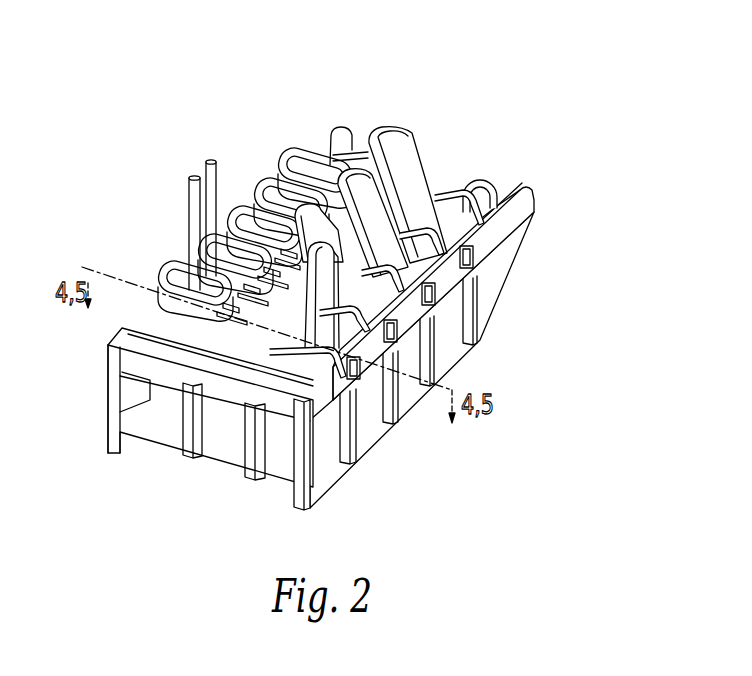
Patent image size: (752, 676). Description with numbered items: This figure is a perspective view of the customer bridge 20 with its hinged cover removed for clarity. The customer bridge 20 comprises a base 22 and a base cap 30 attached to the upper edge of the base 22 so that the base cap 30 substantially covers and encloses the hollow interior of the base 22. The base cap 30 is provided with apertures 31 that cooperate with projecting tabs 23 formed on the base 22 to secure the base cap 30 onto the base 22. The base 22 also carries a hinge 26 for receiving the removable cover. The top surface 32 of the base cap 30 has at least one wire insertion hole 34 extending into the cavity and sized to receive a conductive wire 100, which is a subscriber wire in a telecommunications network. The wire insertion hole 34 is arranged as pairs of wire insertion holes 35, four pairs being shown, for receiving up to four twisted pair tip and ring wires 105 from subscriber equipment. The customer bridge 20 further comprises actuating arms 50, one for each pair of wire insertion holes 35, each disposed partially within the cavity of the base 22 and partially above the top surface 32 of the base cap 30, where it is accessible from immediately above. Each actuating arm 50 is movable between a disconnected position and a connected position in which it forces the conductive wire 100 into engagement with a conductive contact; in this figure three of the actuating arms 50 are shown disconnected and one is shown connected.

The customer bridge 20 is at (477, 88).
The base 22 is at (350, 312).
The projecting tabs 23 is at (434, 298).
The hinge 26 is at (489, 198).
The base cap 30 is at (463, 291).
The apertures 31 is at (474, 254).
The top surface 32 is at (257, 192).
The wire insertion hole 34 is at (311, 156).
The pair of wire insertion holes 35 is at (146, 274).
The actuating arm 50 is at (401, 135).
The conductive wire 100 is at (190, 218).
The twisted pair tip and ring wires 105 is at (204, 165).